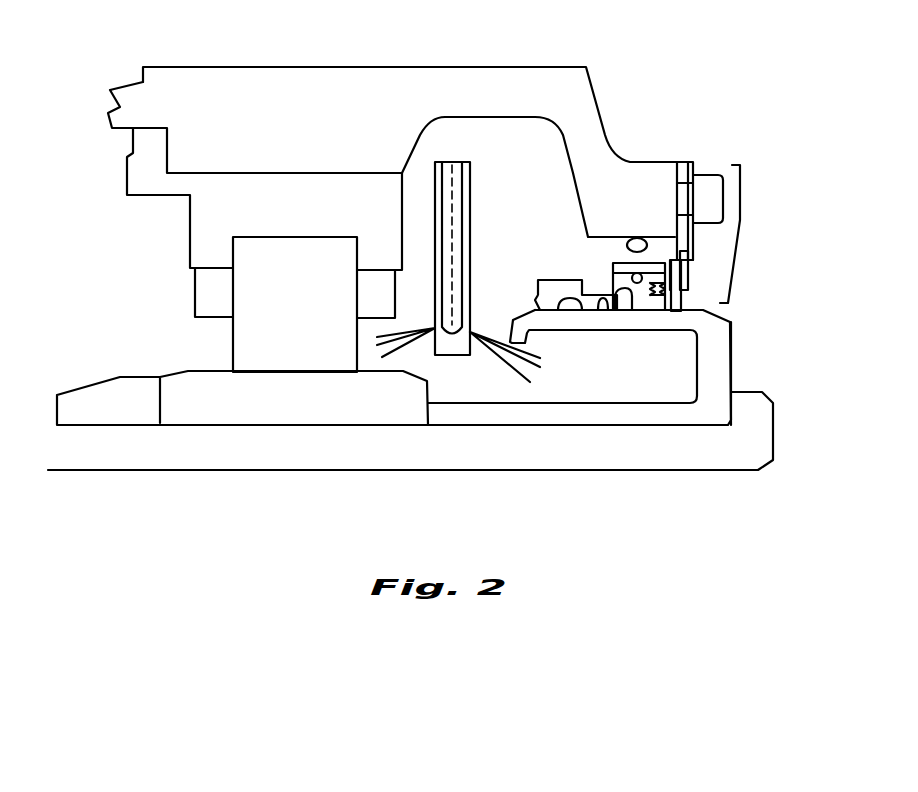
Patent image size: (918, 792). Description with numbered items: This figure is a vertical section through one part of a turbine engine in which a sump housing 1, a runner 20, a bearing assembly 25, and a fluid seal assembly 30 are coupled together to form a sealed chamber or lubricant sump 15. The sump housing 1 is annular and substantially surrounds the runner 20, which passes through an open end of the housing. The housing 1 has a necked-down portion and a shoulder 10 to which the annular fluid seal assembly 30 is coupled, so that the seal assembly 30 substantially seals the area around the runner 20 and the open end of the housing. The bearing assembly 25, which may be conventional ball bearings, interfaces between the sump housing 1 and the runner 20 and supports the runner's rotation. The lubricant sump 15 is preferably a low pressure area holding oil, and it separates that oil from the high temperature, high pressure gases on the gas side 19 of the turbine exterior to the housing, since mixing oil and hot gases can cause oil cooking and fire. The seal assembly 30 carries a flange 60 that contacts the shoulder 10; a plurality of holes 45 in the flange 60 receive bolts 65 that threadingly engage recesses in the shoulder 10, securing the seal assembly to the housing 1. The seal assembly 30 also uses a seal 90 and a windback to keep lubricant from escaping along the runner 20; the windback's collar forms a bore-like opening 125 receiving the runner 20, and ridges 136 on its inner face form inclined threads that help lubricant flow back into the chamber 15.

The sump housing 1 is at (296, 64).
The shoulder 10 is at (675, 163).
The lubricant sump 15 is at (458, 272).
The gas side 19 is at (810, 195).
The runner 20 is at (597, 322).
The bearing assembly 25 is at (295, 304).
The fluid seal assembly 30 is at (740, 230).
The holes 45 is at (617, 367).
The flange 60 is at (693, 153).
The bolts 65 is at (710, 185).
The seal 90 is at (647, 303).
The bore-like opening 125 is at (538, 310).
The ridges 136 is at (567, 303).